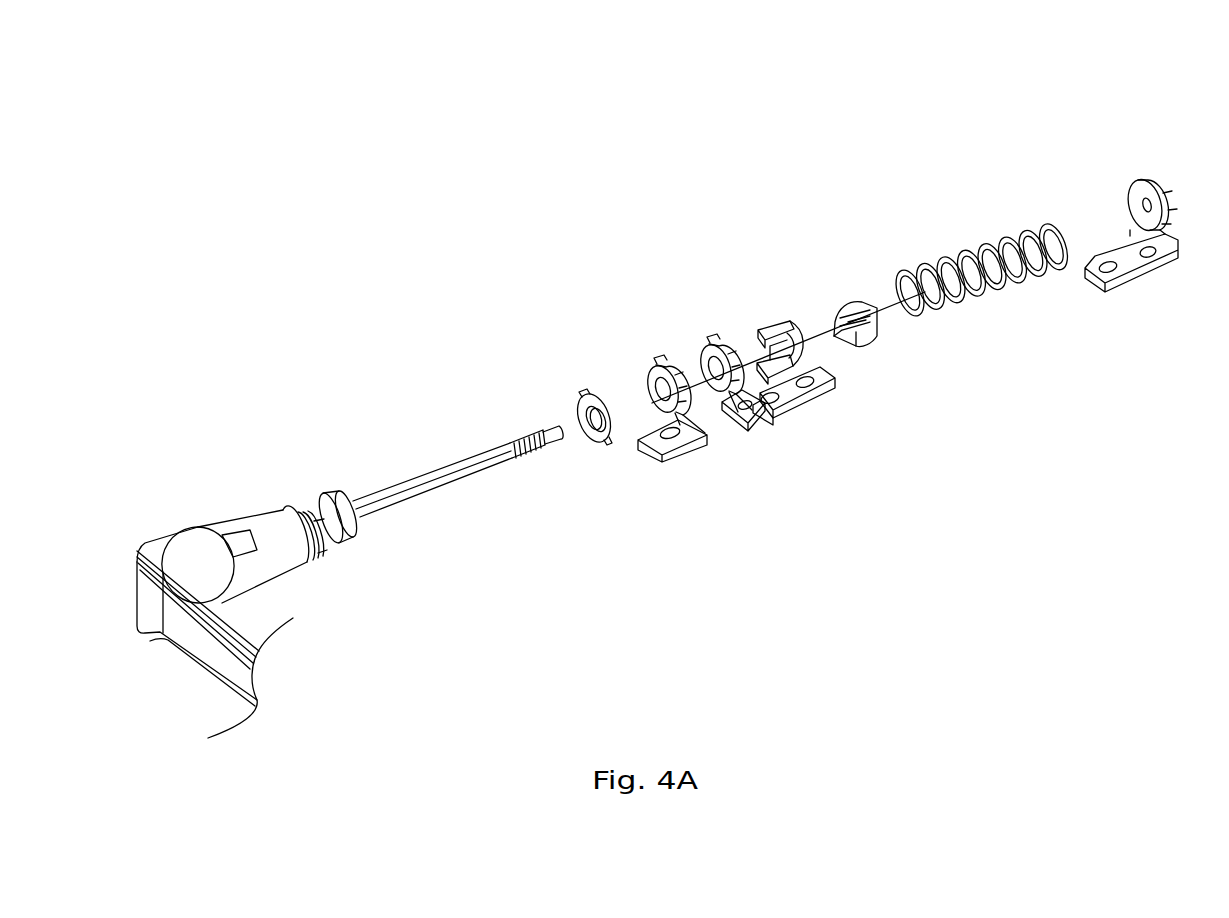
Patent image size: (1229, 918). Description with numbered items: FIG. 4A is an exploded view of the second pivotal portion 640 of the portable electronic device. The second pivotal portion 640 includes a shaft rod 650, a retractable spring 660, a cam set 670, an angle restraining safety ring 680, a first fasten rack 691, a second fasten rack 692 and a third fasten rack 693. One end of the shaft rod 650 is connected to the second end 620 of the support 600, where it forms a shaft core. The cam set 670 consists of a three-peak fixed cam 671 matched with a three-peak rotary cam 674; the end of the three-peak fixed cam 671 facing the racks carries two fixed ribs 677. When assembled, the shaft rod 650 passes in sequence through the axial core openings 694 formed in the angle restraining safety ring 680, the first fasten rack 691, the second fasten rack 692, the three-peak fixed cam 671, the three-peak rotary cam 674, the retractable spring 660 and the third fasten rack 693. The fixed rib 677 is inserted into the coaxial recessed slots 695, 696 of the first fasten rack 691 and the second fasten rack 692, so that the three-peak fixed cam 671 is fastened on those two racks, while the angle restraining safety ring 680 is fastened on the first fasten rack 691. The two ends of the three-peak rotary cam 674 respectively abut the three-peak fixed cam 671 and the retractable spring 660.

The support 600 is at (172, 664).
The second end 620 is at (262, 533).
The shaft rod 650 is at (375, 497).
The second pivotal portion 640 is at (1185, 68).
The angle restraining safety ring 680 is at (592, 398).
The first fasten rack 691 is at (659, 370).
The coaxial recessed slot 696 is at (690, 378).
The second fasten rack 692 is at (706, 345).
The coaxial recessed slot 695 is at (730, 352).
The cam set 670 is at (816, 305).
The three-peak fixed cam 671 is at (828, 370).
The fixed rib 677 is at (784, 310).
The three-peak rotary cam 674 is at (857, 282).
The retractable spring 660 is at (958, 280).
The third fasten rack 693 is at (1138, 190).
The axial core opening 694 is at (640, 437).